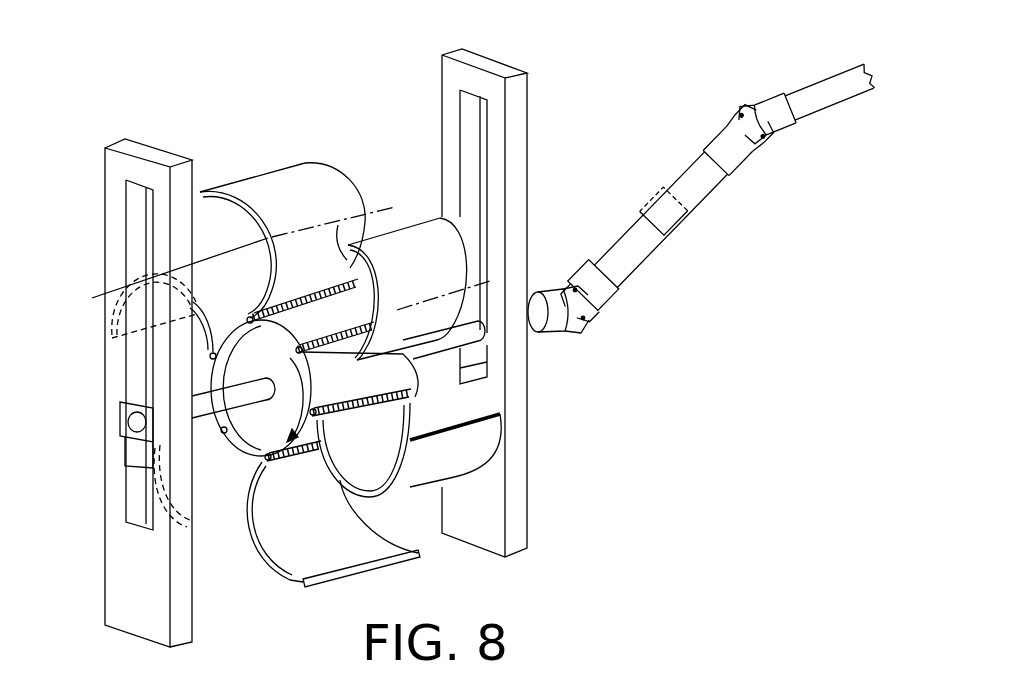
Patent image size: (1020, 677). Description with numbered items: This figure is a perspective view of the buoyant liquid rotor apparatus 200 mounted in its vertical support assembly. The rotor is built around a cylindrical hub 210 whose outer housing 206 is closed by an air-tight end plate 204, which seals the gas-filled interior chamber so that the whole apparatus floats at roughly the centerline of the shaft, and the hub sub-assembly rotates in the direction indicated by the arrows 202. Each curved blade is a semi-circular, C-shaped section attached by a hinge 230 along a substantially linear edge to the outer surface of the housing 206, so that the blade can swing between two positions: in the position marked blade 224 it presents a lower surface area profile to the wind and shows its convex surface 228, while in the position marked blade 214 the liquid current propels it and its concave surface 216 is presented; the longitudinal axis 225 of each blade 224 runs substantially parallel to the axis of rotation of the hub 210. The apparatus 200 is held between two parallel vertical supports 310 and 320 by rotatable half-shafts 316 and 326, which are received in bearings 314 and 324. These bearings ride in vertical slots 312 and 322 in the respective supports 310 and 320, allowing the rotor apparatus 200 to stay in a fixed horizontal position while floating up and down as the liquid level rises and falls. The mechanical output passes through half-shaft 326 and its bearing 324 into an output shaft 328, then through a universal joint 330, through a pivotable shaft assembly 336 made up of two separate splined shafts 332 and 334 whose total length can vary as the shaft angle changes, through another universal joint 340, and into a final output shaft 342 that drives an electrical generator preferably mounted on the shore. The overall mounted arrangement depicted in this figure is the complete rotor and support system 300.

The roller drive assembly 300 is at (692, 422).
The vertical support 310 is at (148, 142).
The vertical slot 312 is at (138, 248).
The bearing 314 is at (122, 440).
The half-shaft 316 is at (199, 410).
The vertical support 320 is at (473, 62).
The vertical slot 322 is at (472, 118).
The bearing 324 is at (487, 345).
The half-shaft 326 is at (425, 362).
The output shaft 328 is at (533, 307).
The universal joint 330 is at (582, 327).
The shaft 332 is at (627, 267).
The shaft 334 is at (710, 190).
The pivotable shaft assembly 336 is at (683, 230).
The universal joint 340 is at (742, 102).
The final output shaft 342 is at (835, 78).
The liquid rotor apparatus 200 is at (323, 137).
The arrows 202 is at (294, 408).
The end plate 204 is at (278, 360).
The outer housing 206 is at (380, 393).
The cylindrical hub 210 is at (232, 318).
The blade 214 is at (303, 585).
The concave surface 216 is at (343, 537).
The blade 224 is at (347, 192).
The longitudinal axis 225 is at (364, 268).
The convex surface 228 is at (321, 207).
The hinge 230 is at (402, 415).